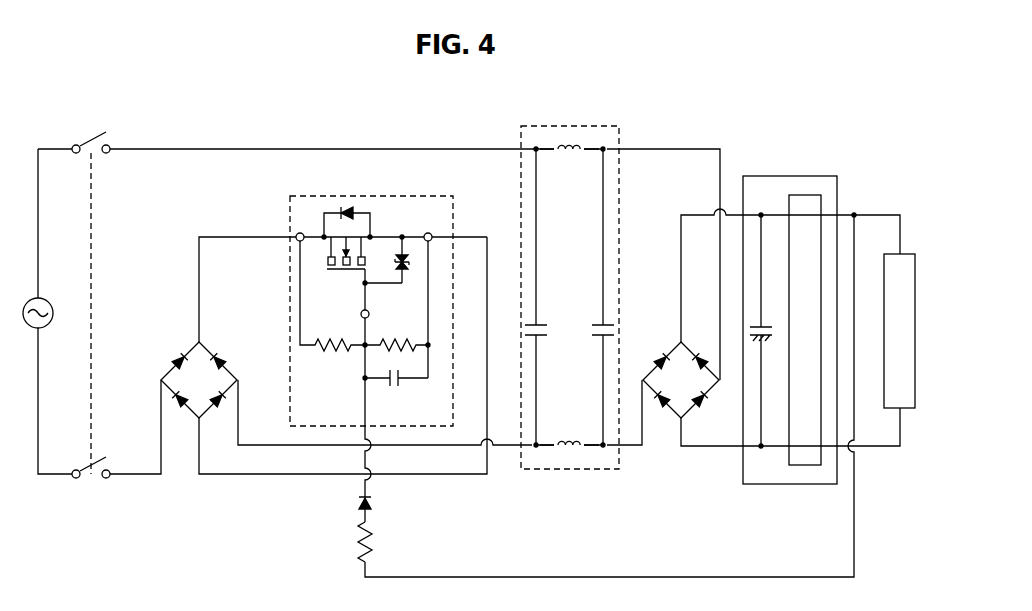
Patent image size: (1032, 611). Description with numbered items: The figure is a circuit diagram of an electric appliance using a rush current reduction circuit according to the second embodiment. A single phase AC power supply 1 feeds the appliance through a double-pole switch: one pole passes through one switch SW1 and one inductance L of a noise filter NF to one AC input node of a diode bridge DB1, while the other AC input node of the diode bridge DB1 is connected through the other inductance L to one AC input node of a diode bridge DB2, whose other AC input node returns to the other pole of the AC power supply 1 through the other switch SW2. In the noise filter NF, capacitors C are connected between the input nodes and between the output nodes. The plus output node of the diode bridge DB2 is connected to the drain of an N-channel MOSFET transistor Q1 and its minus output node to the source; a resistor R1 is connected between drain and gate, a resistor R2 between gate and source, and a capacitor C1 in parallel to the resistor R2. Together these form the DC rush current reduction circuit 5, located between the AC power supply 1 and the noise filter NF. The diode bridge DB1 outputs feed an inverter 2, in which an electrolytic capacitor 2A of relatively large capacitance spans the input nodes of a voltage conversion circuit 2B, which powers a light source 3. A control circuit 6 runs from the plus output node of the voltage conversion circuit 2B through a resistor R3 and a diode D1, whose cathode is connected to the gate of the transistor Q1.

The AC power supply 1 is at (52, 298).
The switch SW1 is at (78, 143).
The switch SW2 is at (92, 479).
The diode bridge DB2 is at (226, 356).
The DC rush current reduction circuit 5 is at (436, 196).
The transistor Q1 is at (341, 282).
The resistor R1 is at (330, 349).
The resistor R2 is at (398, 336).
The capacitor C1 is at (402, 384).
The diode D1 is at (371, 502).
The resistor R3 is at (372, 542).
The control circuit 6 is at (354, 569).
The noise filter NF is at (591, 126).
The inductance L is at (566, 144).
The capacitor C is at (541, 338).
The diode bridge DB1 is at (670, 345).
The inverter 2 is at (778, 176).
The electrolytic capacitor 2A is at (765, 338).
The voltage conversion circuit 2B is at (803, 195).
The light source 3 is at (903, 254).